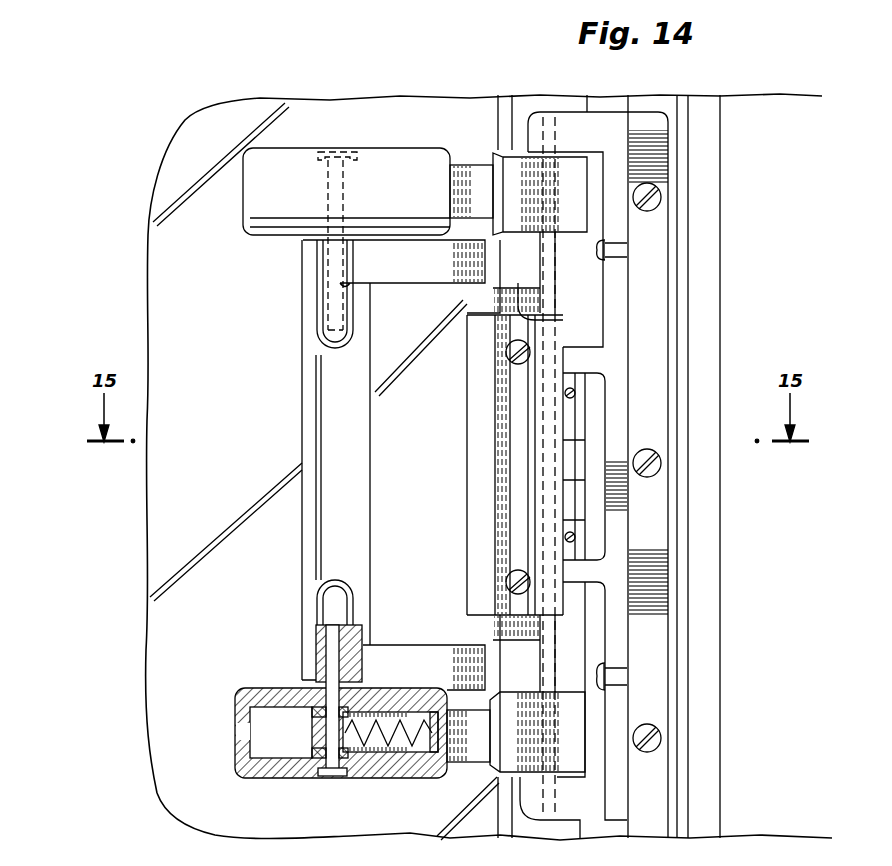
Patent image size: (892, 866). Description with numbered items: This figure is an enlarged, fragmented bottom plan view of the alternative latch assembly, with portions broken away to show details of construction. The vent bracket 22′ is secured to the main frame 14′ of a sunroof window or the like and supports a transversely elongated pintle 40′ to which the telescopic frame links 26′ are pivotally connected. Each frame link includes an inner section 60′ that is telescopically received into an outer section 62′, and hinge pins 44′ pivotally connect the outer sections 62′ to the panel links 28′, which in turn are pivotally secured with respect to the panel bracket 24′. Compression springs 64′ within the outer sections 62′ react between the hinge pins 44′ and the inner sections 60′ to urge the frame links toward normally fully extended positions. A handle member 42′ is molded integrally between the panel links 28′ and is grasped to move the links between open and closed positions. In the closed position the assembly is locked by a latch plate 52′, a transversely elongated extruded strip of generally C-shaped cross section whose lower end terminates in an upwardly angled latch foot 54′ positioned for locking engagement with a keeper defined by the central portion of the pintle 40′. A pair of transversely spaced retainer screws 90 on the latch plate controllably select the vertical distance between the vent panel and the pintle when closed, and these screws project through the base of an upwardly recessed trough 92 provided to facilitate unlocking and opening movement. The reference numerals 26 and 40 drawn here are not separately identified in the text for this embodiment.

The main frame 14′ is at (708, 100).
The frame bracket 22′ is at (662, 322).
The panel bracket 24′ is at (572, 433).
The telescopic frame links 26′ is at (255, 242).
The lower handle assembly 26 is at (290, 778).
The panel links 28′ is at (405, 283).
The pintle 40′ is at (552, 273).
The screw 40 is at (510, 578).
The handle member 42′ is at (300, 447).
The hinge pins 44′ is at (328, 658).
The latch plate 52′ is at (473, 515).
The latch foot 54′ is at (560, 383).
The inner sections 60′ is at (468, 180).
The outer sections 62′ is at (373, 158).
The compression springs 64′ is at (352, 762).
The retainer screws 90 is at (510, 360).
The recessed trough 92 is at (497, 447).